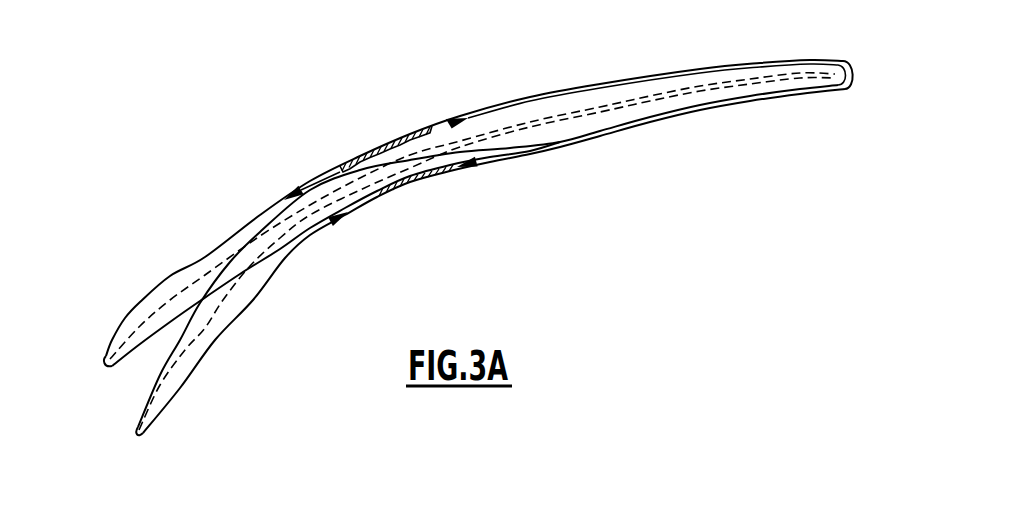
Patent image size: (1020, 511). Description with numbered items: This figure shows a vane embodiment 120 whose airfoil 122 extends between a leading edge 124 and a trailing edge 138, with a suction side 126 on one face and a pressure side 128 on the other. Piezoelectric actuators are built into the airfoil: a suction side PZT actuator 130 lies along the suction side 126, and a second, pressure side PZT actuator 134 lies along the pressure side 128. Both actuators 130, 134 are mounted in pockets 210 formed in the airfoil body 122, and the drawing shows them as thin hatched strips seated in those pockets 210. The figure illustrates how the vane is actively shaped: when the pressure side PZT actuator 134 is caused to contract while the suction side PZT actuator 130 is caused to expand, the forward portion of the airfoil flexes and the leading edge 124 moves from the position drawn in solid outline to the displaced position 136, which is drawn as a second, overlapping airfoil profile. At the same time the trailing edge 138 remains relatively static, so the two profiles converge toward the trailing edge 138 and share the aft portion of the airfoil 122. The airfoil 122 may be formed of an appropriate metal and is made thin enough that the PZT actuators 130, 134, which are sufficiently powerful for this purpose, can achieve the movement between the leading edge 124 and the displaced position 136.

The vane embodiment 120 is at (350, 88).
The airfoil 122 is at (556, 128).
The leading edge 124 is at (104, 360).
The suction side 126 is at (190, 266).
The pressure side 128 is at (677, 113).
The suction side PZT actuator 130 is at (387, 142).
The pressure side PZT actuator 134 is at (378, 200).
The moved leading edge position 136 is at (134, 436).
The trailing edge 138 is at (848, 58).
The pockets 210 is at (343, 170).